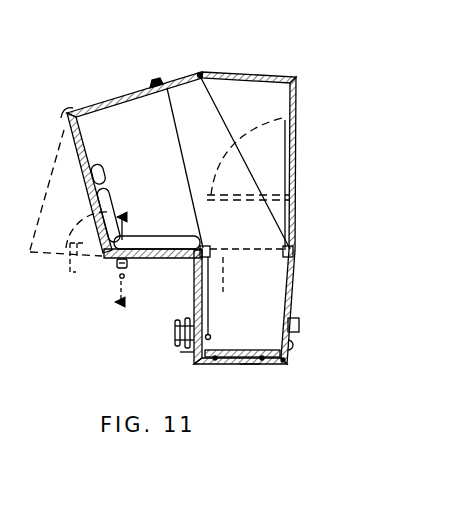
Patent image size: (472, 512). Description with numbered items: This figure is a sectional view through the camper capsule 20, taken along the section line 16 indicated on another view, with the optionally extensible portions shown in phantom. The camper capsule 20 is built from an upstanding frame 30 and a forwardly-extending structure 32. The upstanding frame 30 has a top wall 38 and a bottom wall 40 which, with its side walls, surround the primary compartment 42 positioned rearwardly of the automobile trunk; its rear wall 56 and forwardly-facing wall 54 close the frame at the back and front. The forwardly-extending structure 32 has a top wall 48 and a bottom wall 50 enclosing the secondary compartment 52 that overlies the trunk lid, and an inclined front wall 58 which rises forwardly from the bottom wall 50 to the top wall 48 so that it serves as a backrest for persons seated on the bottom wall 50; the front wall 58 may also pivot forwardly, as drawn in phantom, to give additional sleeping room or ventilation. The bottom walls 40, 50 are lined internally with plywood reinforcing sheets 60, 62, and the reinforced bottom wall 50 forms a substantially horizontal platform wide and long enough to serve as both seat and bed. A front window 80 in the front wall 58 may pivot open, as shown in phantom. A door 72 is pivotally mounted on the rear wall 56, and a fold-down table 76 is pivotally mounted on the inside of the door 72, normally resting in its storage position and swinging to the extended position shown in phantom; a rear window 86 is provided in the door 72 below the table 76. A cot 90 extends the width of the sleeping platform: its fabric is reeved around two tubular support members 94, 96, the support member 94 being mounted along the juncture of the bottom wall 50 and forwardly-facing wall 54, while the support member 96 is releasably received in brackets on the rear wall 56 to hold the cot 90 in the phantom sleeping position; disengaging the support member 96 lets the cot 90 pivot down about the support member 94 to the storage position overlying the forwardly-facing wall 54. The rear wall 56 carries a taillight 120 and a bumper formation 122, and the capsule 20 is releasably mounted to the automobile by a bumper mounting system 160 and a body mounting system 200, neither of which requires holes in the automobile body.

The camper capsule 20 is at (108, 64).
The forwardly-extending structure 32 is at (92, 126).
The top wall 38 is at (188, 72).
The primary compartment 42 is at (240, 104).
The top wall 48 is at (127, 97).
The secondary compartment 52 is at (66, 113).
The front wall 58 is at (84, 172).
The section line 16 is at (124, 263).
The reinforcing sheet 62 is at (176, 236).
The tubular support member 94 is at (203, 246).
The fold-down table 76 is at (283, 147).
The door 72 is at (297, 158).
The rear window 86 is at (299, 216).
The bottom wall 50 is at (150, 259).
The front window 80 is at (72, 268).
The body mounting system 200 is at (111, 278).
The cot 90 is at (209, 291).
The reinforcing sheet 60 is at (212, 352).
The forwardly-facing wall 54 is at (180, 323).
The bumper mounting system 160 is at (176, 359).
The tubular support member 96 is at (202, 362).
The bottom wall 40 is at (240, 364).
The upstanding frame 30 is at (251, 366).
The rear wall 56 is at (284, 360).
The taillight 120 is at (300, 324).
The bumper formation 122 is at (297, 345).